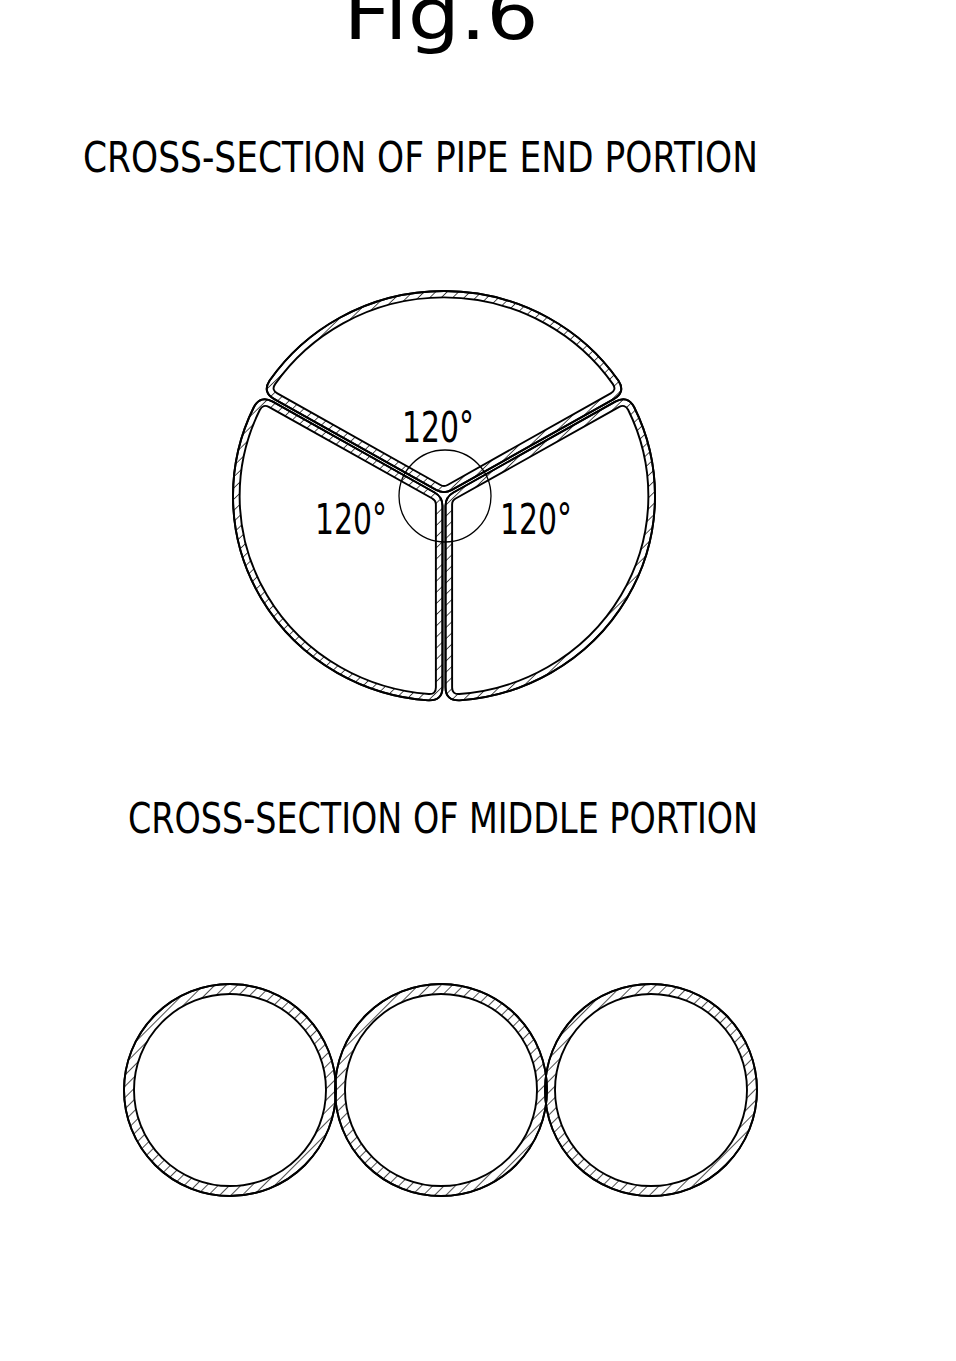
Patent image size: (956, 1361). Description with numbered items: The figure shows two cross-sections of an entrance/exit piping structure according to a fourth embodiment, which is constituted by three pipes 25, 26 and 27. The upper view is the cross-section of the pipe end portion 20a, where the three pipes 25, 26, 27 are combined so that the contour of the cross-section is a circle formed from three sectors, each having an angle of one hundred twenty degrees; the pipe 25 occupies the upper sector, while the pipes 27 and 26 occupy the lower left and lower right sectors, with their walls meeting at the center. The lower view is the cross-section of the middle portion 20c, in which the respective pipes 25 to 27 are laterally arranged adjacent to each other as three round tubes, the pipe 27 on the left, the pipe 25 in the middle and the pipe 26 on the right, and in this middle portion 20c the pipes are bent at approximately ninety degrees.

The pipe end portion 20a is at (262, 352).
The middle portion 20c is at (382, 975).
The pipe 25 is at (510, 322).
The pipe 26 is at (623, 497).
The pipe 27 is at (290, 582).